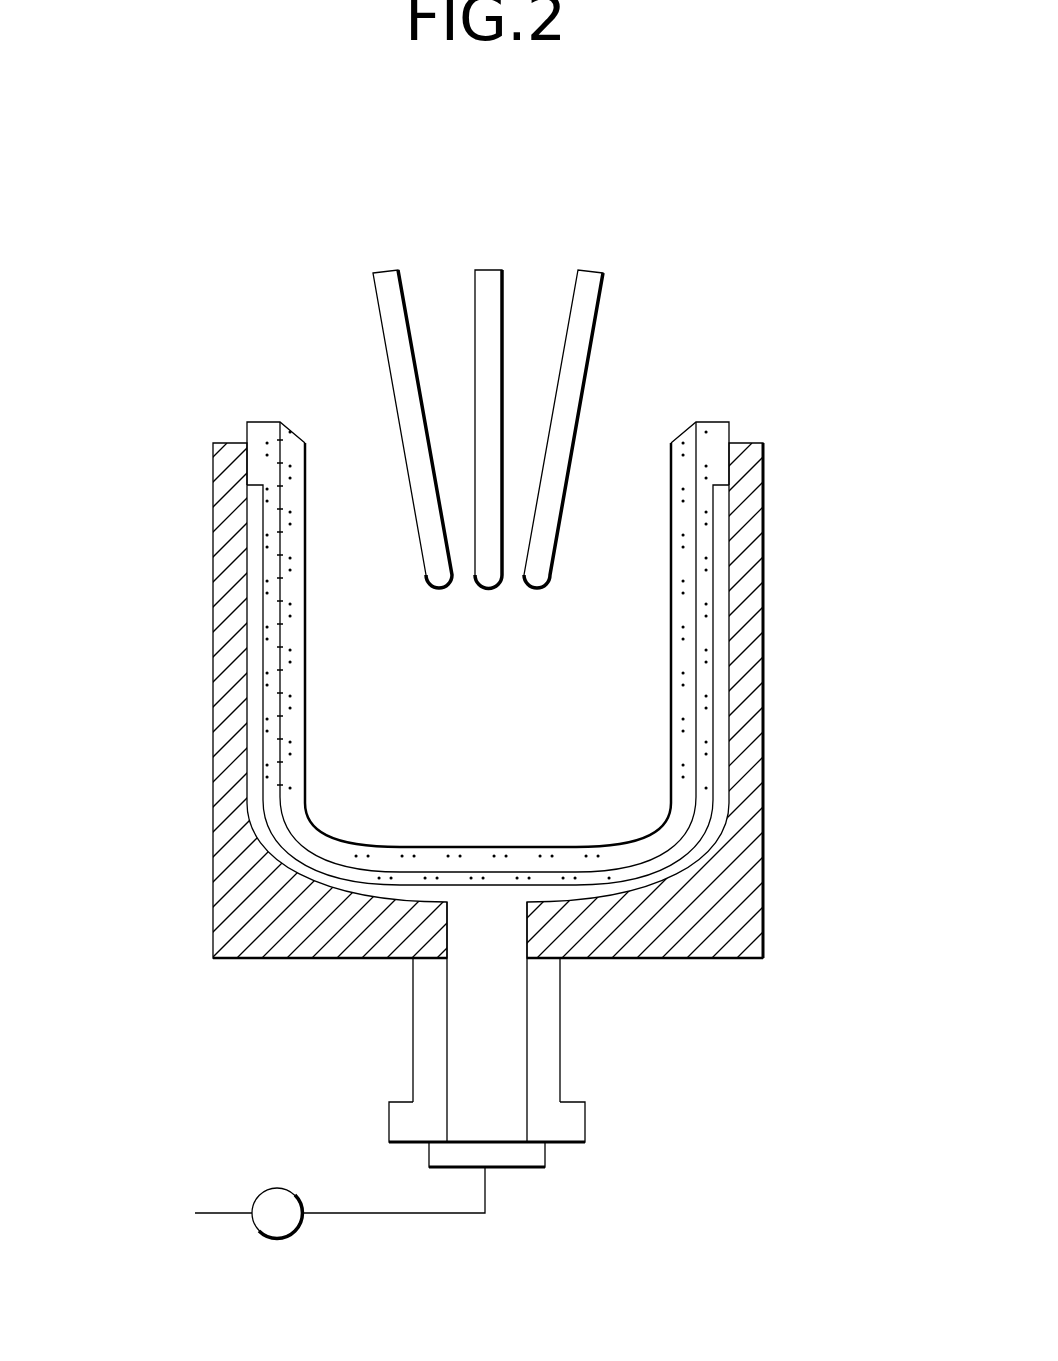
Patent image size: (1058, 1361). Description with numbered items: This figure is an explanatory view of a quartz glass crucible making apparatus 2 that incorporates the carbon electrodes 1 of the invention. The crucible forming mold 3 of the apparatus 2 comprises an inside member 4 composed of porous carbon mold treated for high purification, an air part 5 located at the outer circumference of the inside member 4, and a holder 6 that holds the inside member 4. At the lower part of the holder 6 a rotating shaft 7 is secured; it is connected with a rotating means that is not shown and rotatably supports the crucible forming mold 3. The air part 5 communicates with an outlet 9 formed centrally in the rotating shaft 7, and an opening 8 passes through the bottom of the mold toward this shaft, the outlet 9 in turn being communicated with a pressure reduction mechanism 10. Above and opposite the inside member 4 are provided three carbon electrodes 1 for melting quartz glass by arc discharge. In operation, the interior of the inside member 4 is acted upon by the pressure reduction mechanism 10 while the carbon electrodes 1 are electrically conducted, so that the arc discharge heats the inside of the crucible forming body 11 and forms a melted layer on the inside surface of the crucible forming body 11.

The carbon electrode 1 is at (401, 264).
The quartz glass crucible making apparatus 2 is at (692, 288).
The crucible forming mold 3 is at (778, 503).
The inside member 4 is at (707, 610).
The air part 5 is at (718, 732).
The holder 6 is at (762, 836).
The rotating shaft 7 is at (562, 1007).
The opening 8 is at (483, 952).
The outlet 9 is at (512, 1120).
The pressure reduction mechanism 10 is at (293, 1235).
The crucible forming body 11 is at (305, 625).